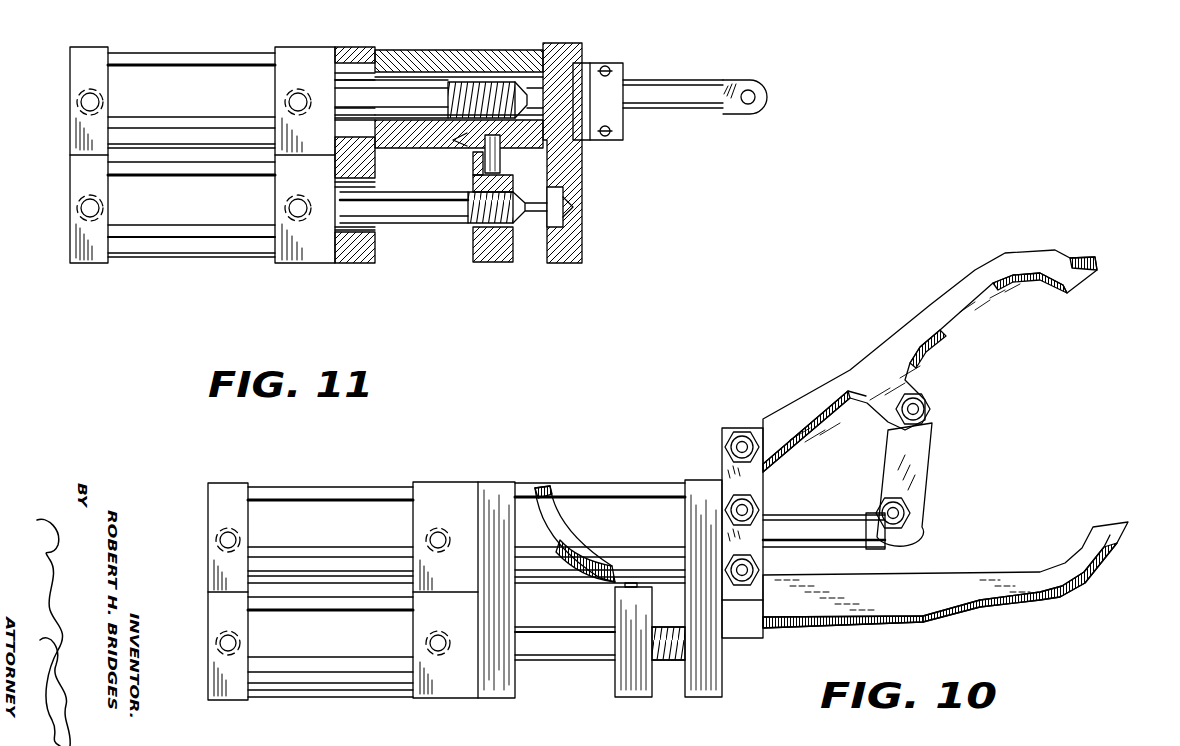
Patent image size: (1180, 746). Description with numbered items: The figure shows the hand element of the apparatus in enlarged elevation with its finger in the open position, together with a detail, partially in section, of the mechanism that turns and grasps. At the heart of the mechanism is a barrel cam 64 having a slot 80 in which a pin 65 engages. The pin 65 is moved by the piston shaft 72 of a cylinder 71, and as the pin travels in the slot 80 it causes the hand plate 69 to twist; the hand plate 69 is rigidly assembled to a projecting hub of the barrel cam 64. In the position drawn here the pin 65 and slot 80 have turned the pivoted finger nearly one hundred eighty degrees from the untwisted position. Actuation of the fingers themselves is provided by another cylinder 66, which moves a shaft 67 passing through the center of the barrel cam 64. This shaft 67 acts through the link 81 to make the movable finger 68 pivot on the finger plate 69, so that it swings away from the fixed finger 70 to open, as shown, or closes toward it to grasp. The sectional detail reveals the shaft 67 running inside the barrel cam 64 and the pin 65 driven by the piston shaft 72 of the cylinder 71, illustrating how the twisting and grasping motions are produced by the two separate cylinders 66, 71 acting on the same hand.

In FIG. 11, the barrel cam 64 is at (455, 50).
In FIG. 10, the barrel cam 64 is at (616, 483).
In FIG. 11, the pin 65 is at (490, 157).
In FIG. 10, the pin 65 is at (641, 588).
In FIG. 10, the cylinder 66 is at (340, 536).
In FIG. 11, the shaft 67 is at (640, 80).
In FIG. 10, the shaft 67 is at (782, 514).
In FIG. 10, the movable finger 68 is at (853, 343).
In FIG. 10, the hand plate 69 is at (730, 428).
In FIG. 10, the fixed finger 70 is at (925, 577).
In FIG. 10, the cylinder 71 is at (308, 641).
In FIG. 10, the piston shaft 72 is at (565, 625).
In FIG. 10, the slot 80 is at (537, 490).
In FIG. 10, the link 81 is at (920, 486).